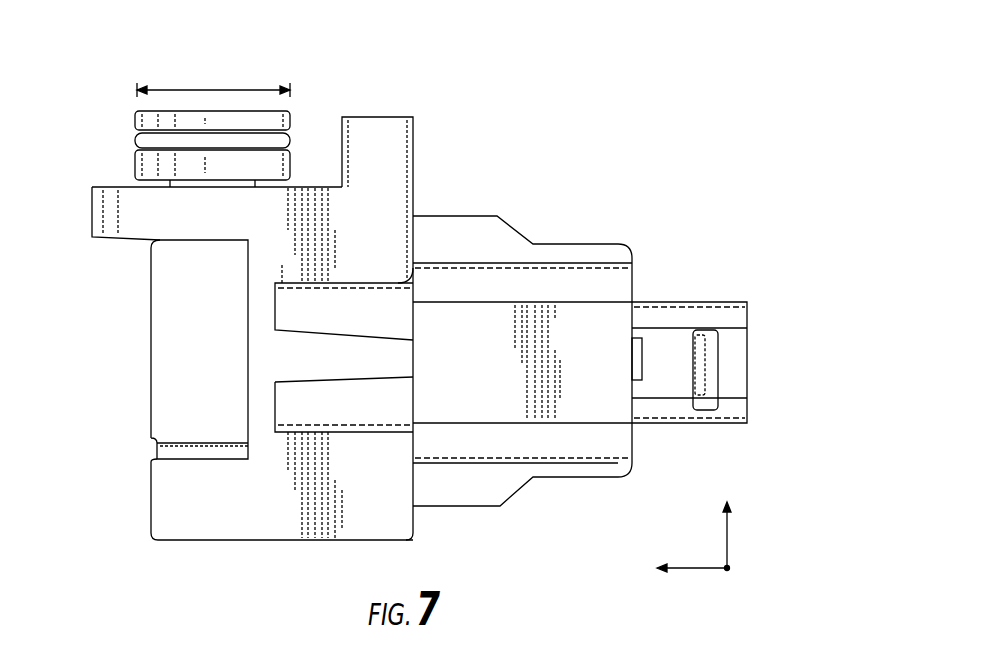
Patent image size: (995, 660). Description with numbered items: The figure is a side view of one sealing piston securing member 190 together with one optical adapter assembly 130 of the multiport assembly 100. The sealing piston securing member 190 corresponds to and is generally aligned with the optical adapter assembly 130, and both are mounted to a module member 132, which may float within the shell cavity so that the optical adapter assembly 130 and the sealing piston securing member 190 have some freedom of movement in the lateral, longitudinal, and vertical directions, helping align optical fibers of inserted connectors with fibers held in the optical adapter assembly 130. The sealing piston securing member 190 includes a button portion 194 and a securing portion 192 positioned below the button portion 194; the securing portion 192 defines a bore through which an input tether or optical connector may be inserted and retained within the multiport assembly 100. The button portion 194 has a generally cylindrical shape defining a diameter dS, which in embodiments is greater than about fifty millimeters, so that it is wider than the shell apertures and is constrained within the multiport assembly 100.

The multiport assembly 100 is at (660, 110).
The optical adapter assembly 130 is at (587, 224).
The module member 132 is at (406, 118).
The sealing piston securing member 190 is at (277, 82).
The securing portion 192 is at (122, 313).
The button portion 194 is at (114, 161).
The diameter dS is at (217, 82).